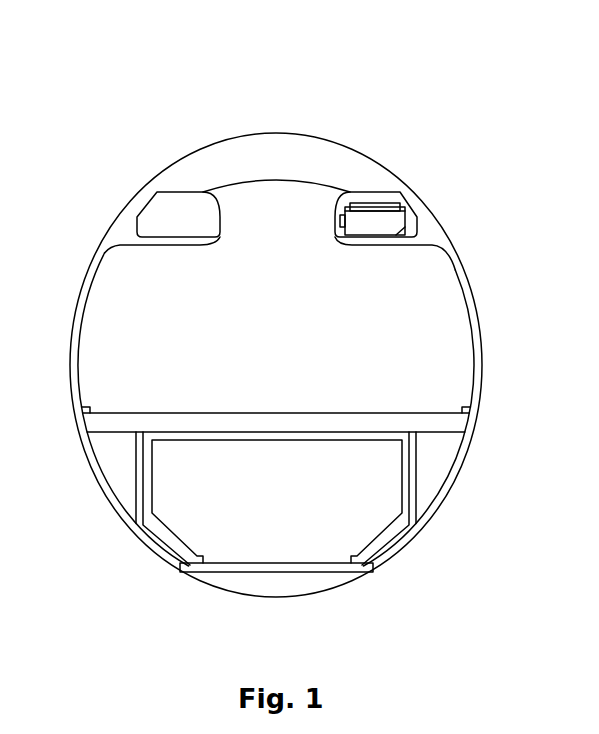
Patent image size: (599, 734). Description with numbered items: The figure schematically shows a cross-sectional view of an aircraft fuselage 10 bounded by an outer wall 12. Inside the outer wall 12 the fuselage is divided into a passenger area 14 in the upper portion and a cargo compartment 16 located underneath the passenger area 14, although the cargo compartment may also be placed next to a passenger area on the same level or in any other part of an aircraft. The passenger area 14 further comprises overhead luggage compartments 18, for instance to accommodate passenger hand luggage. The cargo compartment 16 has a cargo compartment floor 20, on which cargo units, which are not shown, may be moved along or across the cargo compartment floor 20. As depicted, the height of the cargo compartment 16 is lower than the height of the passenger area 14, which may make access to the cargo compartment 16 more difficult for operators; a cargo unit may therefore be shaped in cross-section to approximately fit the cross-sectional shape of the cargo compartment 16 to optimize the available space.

The aircraft fuselage 10 is at (126, 103).
The outer wall 12 is at (355, 151).
The passenger area 14 is at (399, 290).
The cargo compartment 16 is at (193, 513).
The overhead luggage compartments 18 is at (157, 218).
The cargo compartment floor 20 is at (273, 555).